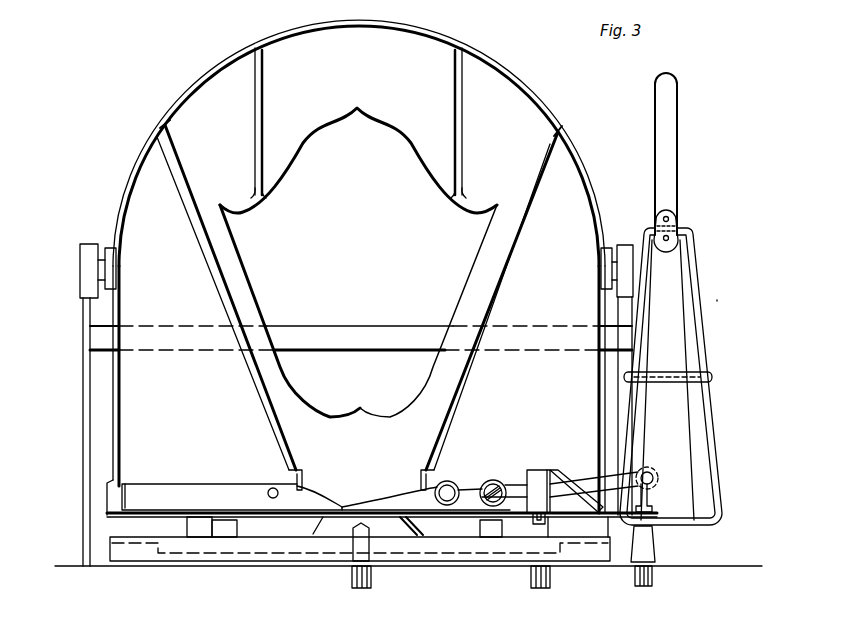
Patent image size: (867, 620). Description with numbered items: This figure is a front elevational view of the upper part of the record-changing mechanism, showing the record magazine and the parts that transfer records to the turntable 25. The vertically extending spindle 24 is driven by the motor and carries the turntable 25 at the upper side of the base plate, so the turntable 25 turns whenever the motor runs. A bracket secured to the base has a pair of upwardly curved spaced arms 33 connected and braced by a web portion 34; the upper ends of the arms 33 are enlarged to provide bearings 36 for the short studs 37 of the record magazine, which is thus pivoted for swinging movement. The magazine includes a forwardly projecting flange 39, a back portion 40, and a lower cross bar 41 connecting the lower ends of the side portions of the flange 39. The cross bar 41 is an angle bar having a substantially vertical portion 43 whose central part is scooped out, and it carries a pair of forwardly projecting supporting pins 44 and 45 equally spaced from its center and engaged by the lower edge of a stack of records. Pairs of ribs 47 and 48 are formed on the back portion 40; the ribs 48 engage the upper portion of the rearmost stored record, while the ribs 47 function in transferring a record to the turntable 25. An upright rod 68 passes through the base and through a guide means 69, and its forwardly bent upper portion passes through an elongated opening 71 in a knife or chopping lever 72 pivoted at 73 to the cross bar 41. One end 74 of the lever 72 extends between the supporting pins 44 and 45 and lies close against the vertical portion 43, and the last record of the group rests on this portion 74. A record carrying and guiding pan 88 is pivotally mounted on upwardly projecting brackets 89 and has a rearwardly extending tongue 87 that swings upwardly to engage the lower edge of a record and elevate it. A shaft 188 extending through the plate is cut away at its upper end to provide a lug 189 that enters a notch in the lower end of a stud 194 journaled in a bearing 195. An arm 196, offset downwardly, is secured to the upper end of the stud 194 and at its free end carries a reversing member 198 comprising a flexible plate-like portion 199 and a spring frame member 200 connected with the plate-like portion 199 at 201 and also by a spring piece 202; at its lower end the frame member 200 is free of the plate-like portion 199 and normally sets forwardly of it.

The spindle 24 is at (352, 578).
The turntable 25 is at (280, 558).
The arms 33 is at (82, 342).
The web portion 34 is at (358, 333).
The bearings 36 is at (88, 250).
The studs 37 is at (104, 262).
The flange 39 is at (121, 406).
The back portion 40 is at (148, 255).
The cross bar 41 is at (173, 488).
The vertical portion 43 is at (155, 485).
The supporting pin 44 is at (272, 488).
The supporting pin 45 is at (447, 481).
The ribs 47 is at (221, 290).
The ribs 48 is at (262, 115).
The upright rod 68 is at (650, 497).
The guide means 69 is at (654, 546).
The elongated opening 71 is at (656, 474).
The knife lever 72 is at (604, 483).
The pivot 73 is at (492, 480).
The lever end 74 is at (372, 506).
The tongue 87 is at (392, 525).
The pan 88 is at (233, 543).
The brackets 89 is at (188, 520).
The shaft 188 is at (551, 580).
The lug 189 is at (540, 524).
The stud 194 is at (543, 478).
The bearing 195 is at (522, 478).
The arm 196 is at (553, 470).
The reversing member 198 is at (716, 463).
The plate-like portion 199 is at (666, 344).
The spring frame member 200 is at (713, 410).
The connection 201 is at (678, 232).
The spring piece 202 is at (695, 378).